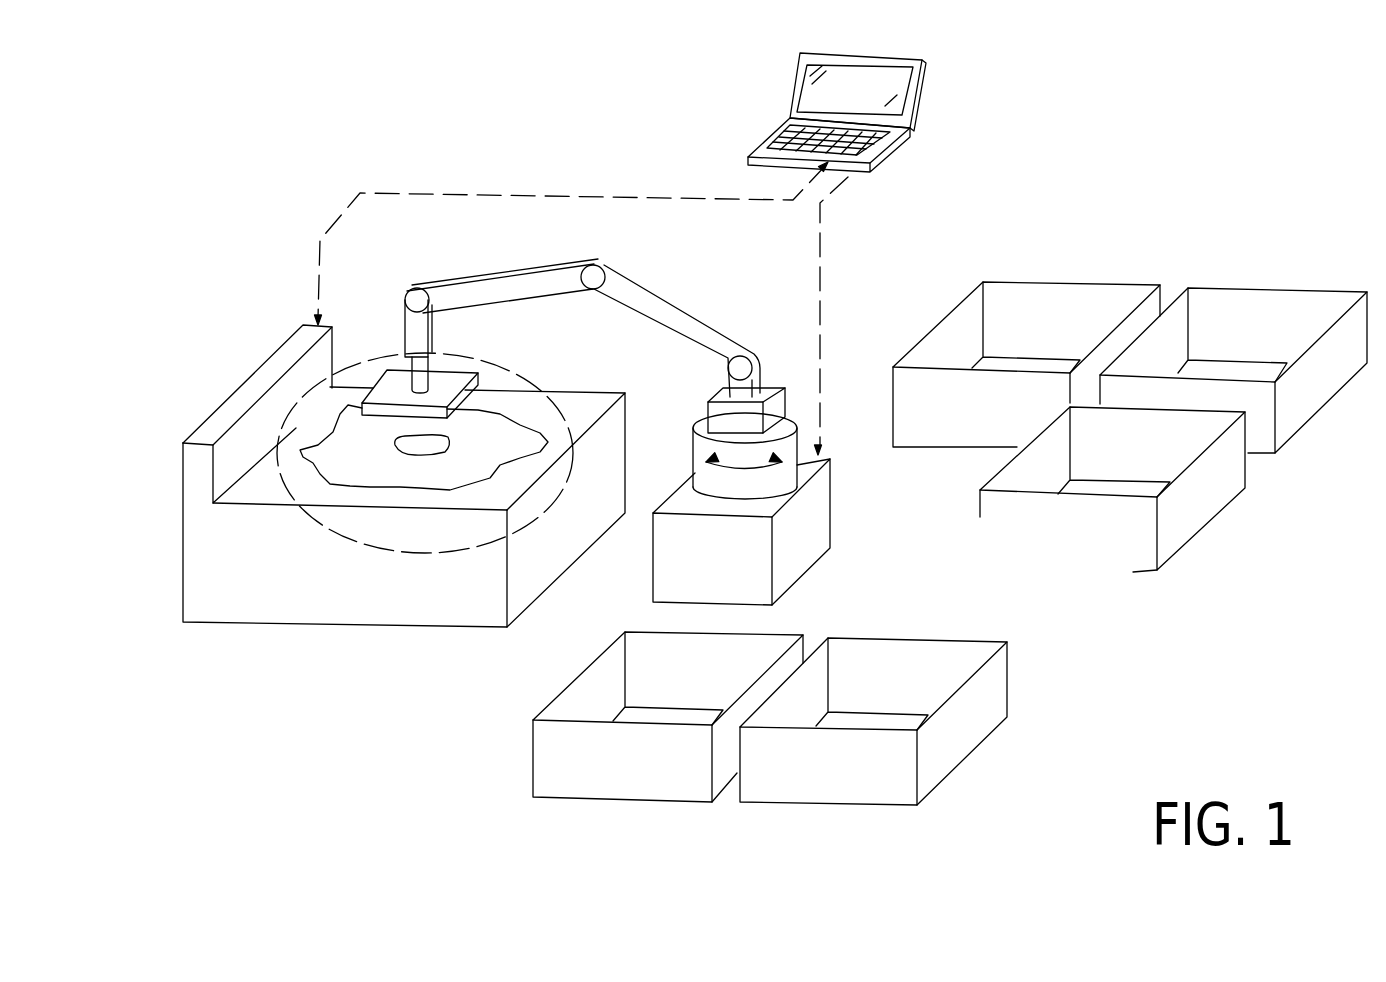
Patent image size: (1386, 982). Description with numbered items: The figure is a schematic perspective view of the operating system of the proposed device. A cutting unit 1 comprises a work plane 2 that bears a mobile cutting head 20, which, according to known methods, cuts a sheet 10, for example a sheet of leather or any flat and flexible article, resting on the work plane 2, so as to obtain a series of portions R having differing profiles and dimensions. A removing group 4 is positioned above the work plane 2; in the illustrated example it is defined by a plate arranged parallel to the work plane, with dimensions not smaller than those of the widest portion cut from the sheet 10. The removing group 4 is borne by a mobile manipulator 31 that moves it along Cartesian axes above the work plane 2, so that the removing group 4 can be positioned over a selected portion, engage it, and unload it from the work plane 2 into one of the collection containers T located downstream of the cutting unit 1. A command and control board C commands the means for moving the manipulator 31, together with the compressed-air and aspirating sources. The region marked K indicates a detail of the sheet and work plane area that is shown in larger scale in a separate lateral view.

The cutting unit 1 is at (167, 455).
The work plane 2 is at (300, 482).
The removing group 4 is at (457, 378).
The sheet 10 is at (380, 470).
The mobile cutting head 20 is at (247, 392).
The mobile manipulator 31 is at (530, 262).
The command and control board C is at (935, 104).
The detail K is at (327, 527).
The portions R is at (428, 447).
The collection containers T is at (1065, 293).